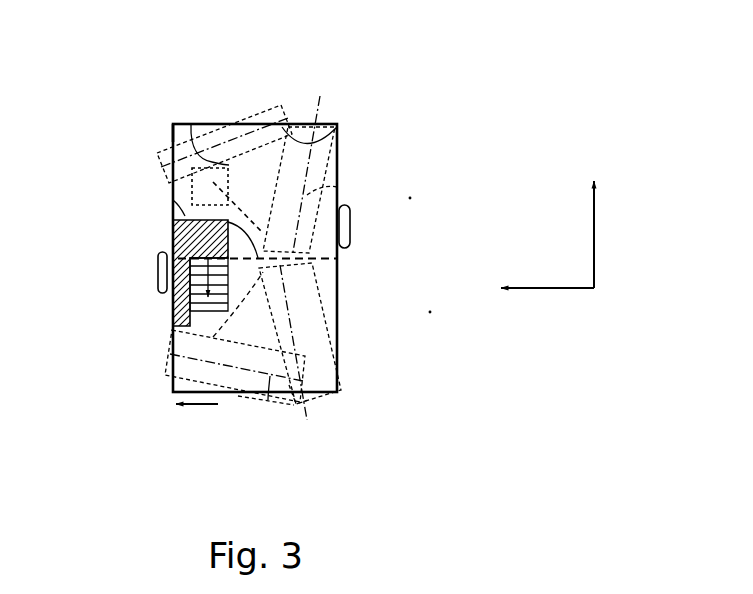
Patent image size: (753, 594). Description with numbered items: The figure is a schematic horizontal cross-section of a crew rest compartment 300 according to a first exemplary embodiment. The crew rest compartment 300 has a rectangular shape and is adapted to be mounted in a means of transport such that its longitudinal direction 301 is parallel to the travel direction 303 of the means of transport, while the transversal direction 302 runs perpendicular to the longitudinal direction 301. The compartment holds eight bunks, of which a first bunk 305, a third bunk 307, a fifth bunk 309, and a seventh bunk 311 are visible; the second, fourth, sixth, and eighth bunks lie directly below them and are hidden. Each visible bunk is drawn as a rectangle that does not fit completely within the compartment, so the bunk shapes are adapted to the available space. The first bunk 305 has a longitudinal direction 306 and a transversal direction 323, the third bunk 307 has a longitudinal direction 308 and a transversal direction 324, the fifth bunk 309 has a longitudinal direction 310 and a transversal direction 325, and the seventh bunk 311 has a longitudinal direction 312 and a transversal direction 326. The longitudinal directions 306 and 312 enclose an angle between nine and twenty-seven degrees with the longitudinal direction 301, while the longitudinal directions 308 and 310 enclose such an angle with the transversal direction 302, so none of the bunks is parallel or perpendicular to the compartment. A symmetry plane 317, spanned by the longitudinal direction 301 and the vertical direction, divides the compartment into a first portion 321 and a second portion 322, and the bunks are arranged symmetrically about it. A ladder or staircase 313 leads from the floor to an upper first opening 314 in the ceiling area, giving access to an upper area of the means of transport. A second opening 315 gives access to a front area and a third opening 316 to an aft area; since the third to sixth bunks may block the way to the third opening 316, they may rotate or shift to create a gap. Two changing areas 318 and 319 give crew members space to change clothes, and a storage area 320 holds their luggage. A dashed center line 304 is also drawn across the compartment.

The crew rest compartment 300 is at (394, 64).
The longitudinal direction of the crew rest compartment 301 is at (553, 290).
The transversal direction of the crew rest compartment 302 is at (596, 221).
The travel direction 303 is at (198, 407).
The center line 304 is at (338, 261).
The first bunk 305 is at (264, 394).
The longitudinal direction of the first bunk 306 is at (170, 368).
The third bunk 307 is at (338, 333).
The longitudinal direction of the third bunk 308 is at (338, 367).
The fifth bunk 309 is at (338, 163).
The longitudinal direction of the fifth bunk 310 is at (340, 126).
The seventh bunk 311 is at (191, 125).
The longitudinal direction of the seventh bunk 312 is at (252, 148).
The ladder or staircase 313 is at (173, 305).
The first opening 314 is at (175, 208).
The second opening 315 is at (158, 276).
The third opening 316 is at (352, 225).
The symmetry plane 317 is at (222, 207).
The changing area 318 is at (255, 166).
The changing area 319 is at (303, 399).
The storage area 320 is at (173, 241).
The first portion 321 is at (434, 314).
The second portion 322 is at (413, 197).
The transversal direction of the first bunk 323 is at (268, 393).
The transversal direction of the third bunk 324 is at (336, 318).
The transversal direction of the fifth bunk 325 is at (338, 192).
The transversal direction of the seventh bunk 326 is at (173, 124).